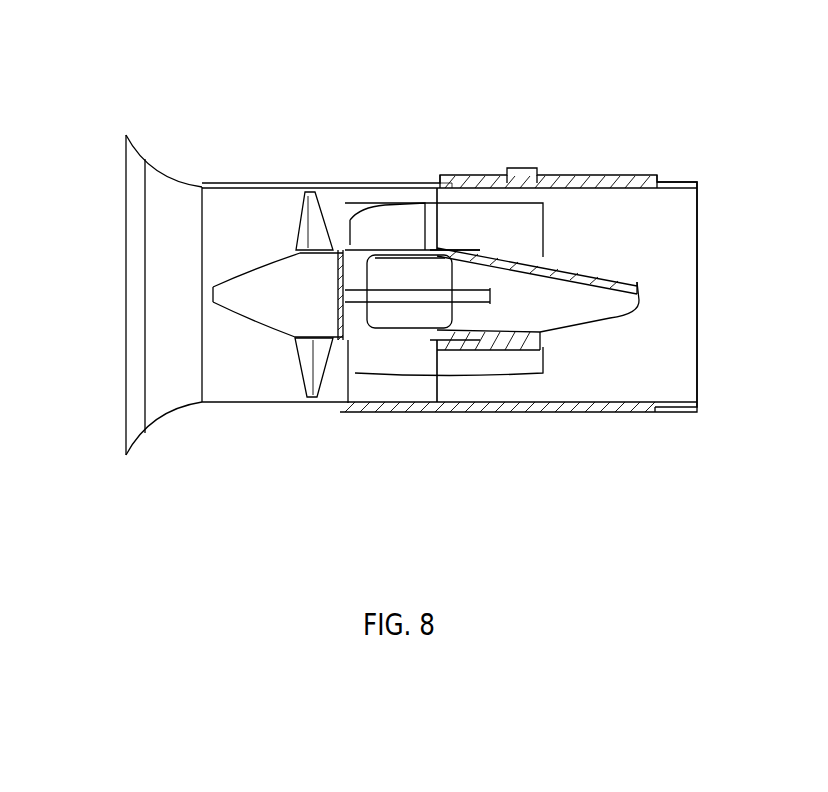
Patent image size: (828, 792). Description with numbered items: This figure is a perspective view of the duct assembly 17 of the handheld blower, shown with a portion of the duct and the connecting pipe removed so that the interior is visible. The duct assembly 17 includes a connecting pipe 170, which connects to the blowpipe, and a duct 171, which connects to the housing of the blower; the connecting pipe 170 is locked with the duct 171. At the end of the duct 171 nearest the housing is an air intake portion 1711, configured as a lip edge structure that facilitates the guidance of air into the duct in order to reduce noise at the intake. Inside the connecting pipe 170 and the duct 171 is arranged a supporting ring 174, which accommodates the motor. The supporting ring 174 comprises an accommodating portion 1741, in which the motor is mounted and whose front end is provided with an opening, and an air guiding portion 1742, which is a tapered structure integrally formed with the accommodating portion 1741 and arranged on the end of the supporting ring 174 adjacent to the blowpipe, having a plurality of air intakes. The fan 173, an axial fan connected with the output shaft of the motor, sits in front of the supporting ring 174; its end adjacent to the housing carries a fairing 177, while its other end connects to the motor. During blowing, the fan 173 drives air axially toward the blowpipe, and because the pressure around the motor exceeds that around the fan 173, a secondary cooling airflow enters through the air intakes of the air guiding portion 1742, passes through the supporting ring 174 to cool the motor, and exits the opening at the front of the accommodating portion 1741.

The duct assembly 17 is at (385, 153).
The connecting pipe 170 is at (630, 178).
The duct 171 is at (255, 200).
The air intake portion 1711 is at (143, 410).
The fan 173 is at (305, 367).
The supporting ring 174 is at (562, 78).
The accommodating portion 1741 is at (437, 227).
The air guiding portion 1742 is at (547, 260).
The fairing 177 is at (260, 276).